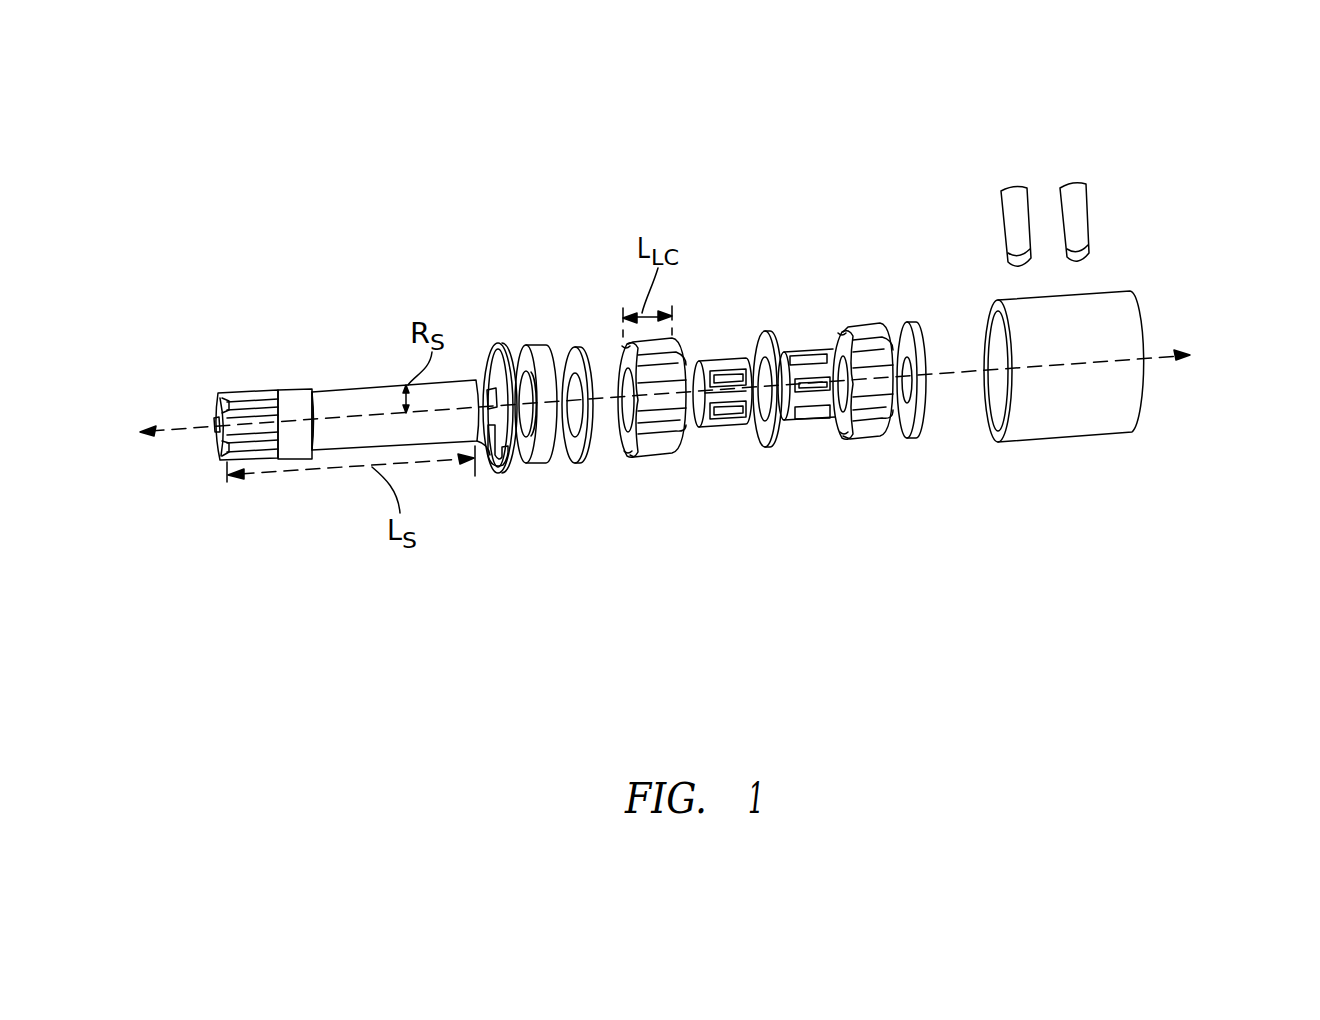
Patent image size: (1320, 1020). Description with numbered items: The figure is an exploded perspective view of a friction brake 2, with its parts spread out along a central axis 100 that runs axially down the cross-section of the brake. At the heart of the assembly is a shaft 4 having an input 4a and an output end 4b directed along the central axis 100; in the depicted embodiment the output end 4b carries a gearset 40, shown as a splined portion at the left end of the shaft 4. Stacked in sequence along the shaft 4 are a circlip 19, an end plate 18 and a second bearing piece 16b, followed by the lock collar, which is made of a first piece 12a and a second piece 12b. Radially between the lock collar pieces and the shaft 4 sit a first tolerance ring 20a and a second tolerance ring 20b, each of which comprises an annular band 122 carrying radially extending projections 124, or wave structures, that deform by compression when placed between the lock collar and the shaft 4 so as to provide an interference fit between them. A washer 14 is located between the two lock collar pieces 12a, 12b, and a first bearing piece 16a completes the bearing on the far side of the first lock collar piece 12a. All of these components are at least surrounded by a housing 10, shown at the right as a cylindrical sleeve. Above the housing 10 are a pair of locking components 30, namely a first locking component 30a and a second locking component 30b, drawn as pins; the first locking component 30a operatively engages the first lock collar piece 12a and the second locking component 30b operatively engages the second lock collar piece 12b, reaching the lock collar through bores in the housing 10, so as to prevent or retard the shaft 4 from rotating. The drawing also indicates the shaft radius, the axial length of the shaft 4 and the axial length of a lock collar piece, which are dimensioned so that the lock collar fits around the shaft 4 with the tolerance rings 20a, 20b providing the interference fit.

The friction brake 2 is at (1198, 98).
The central axis 100 is at (197, 430).
The shaft 4 is at (358, 389).
The gearset 40 is at (243, 395).
The output end 4b is at (218, 417).
The input 4a is at (510, 462).
The circlip 19 is at (492, 342).
The end plate 18 is at (545, 460).
The second bearing piece 16b is at (578, 346).
The second piece of lock collar 12b is at (652, 457).
The second tolerance ring 20b is at (715, 358).
The projections 124 is at (728, 375).
The annular band 122 is at (705, 427).
The washer 14 is at (772, 447).
The first tolerance ring 20a is at (793, 357).
The first piece of lock collar 12a is at (855, 443).
The first bearing piece 16a is at (918, 438).
The housing 10 is at (1062, 440).
The locking component 30 is at (1046, 190).
The first locking component 30a is at (1088, 227).
The second locking component 30b is at (1006, 233).